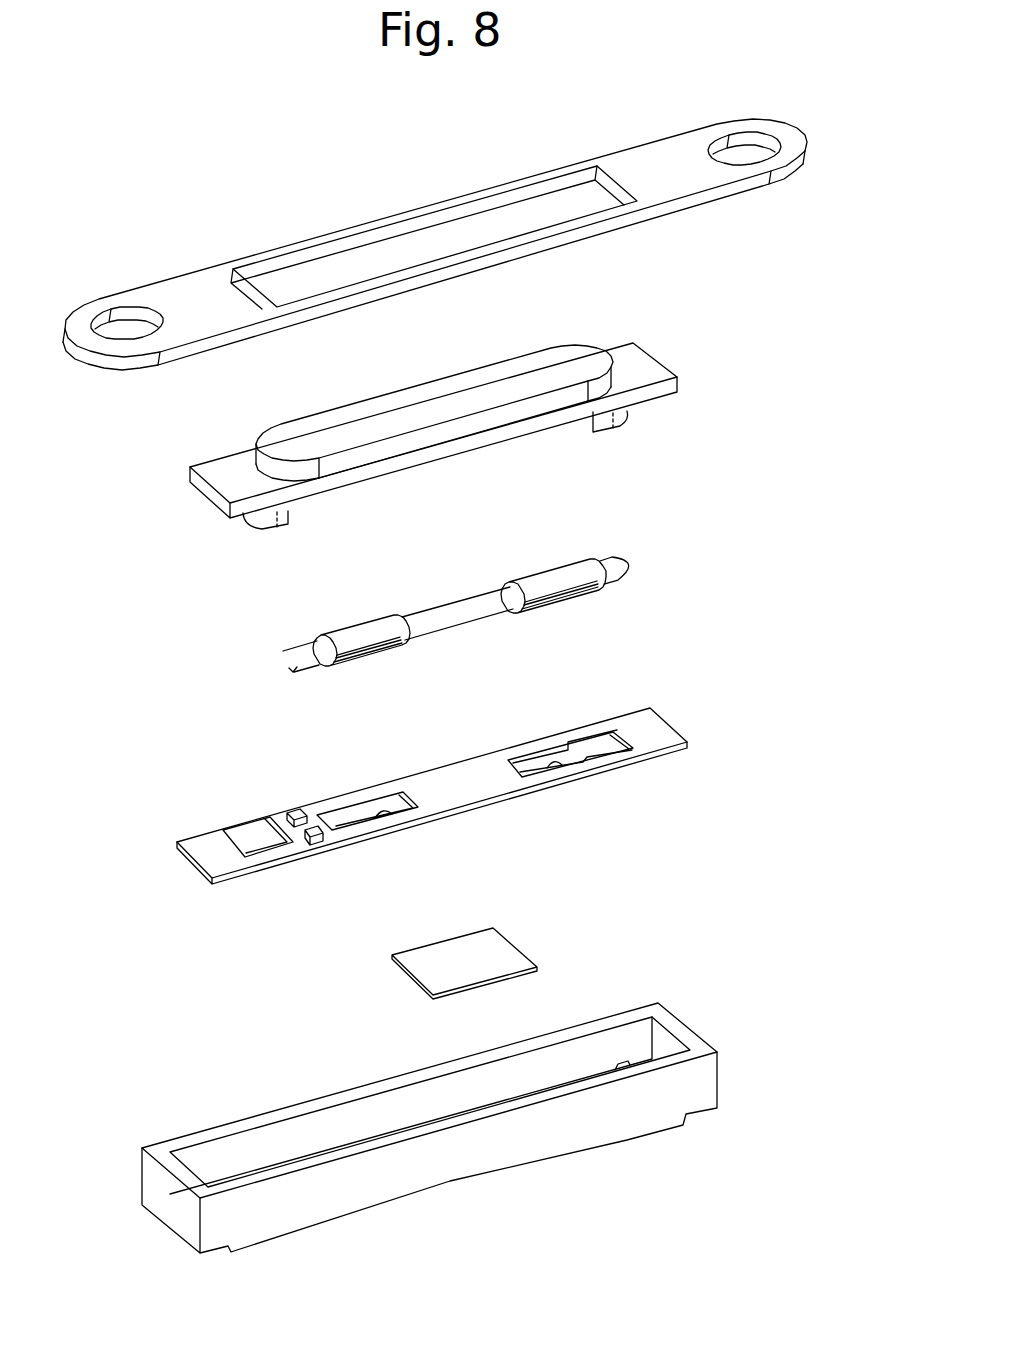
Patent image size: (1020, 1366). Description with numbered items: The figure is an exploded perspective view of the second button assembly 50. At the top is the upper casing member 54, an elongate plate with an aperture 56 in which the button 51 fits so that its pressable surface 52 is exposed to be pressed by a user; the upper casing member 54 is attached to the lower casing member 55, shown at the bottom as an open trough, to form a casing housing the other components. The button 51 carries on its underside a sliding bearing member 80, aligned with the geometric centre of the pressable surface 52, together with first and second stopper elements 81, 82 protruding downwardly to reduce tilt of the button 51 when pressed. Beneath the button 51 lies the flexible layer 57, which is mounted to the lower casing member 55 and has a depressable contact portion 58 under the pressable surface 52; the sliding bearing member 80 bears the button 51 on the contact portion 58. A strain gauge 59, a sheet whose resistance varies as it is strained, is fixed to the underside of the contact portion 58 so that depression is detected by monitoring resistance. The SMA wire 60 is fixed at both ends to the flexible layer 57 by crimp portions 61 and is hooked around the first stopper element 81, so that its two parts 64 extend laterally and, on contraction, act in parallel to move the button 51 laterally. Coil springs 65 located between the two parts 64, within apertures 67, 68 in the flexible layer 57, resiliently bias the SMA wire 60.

The second button assembly 50 is at (193, 230).
The button 51 is at (640, 357).
The pressable surface 52 is at (473, 372).
The upper casing member 54 is at (690, 158).
The lower casing member 55 is at (447, 1177).
The aperture 56 is at (545, 187).
The flexible layer 57 is at (657, 727).
The contact portion 58 is at (457, 783).
The strain gauge 59 is at (428, 975).
The SMA wire 60 is at (437, 607).
The crimp portions 61 is at (296, 813).
The parts of the SMA wire 64 is at (488, 592).
The coil spring 65 is at (345, 645).
The aperture 67 is at (548, 773).
The aperture 68 is at (387, 816).
The sliding bearing member 80 is at (424, 450).
The first stopper element 81 is at (624, 432).
The second stopper element 82 is at (263, 529).